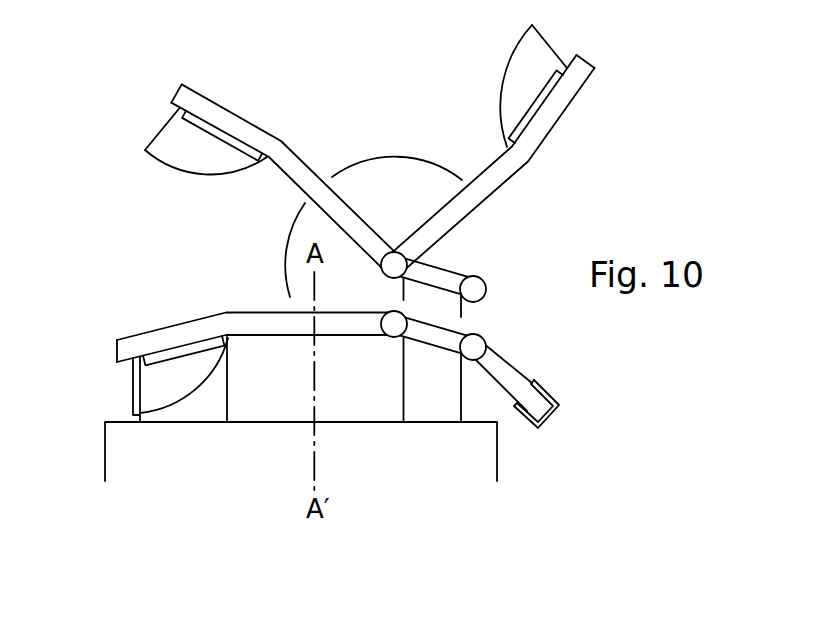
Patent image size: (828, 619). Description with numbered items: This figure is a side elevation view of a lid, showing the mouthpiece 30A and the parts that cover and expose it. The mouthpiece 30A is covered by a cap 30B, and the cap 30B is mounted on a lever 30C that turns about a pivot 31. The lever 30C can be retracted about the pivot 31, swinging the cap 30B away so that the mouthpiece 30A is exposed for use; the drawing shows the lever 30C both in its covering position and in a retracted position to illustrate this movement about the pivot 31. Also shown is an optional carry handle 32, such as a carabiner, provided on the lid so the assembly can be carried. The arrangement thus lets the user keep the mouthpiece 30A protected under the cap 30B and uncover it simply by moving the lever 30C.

The mouthpiece 30A is at (229, 374).
The cap 30B is at (156, 140).
The lever 30C is at (297, 150).
The pivot 31 is at (394, 262).
The carry handle 32 is at (521, 381).